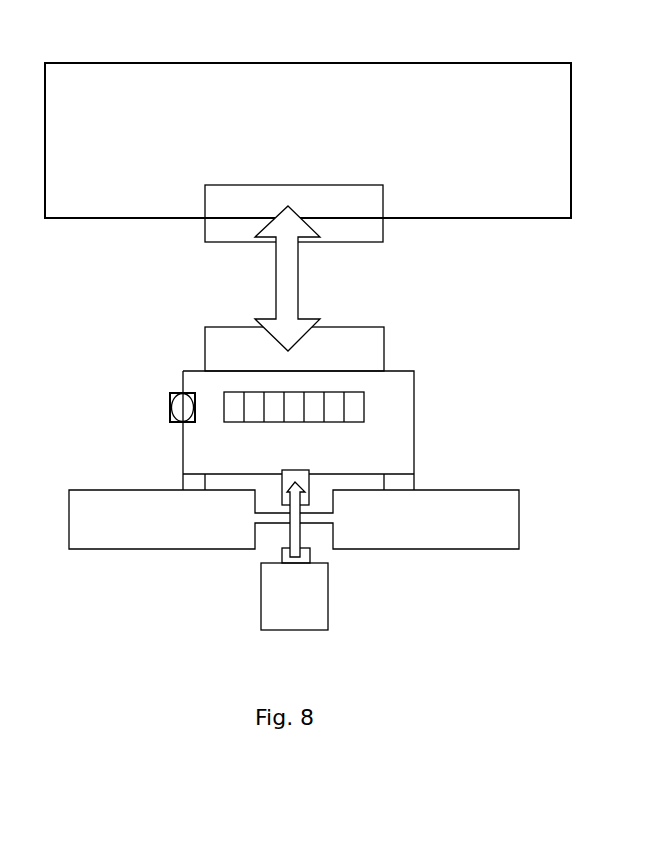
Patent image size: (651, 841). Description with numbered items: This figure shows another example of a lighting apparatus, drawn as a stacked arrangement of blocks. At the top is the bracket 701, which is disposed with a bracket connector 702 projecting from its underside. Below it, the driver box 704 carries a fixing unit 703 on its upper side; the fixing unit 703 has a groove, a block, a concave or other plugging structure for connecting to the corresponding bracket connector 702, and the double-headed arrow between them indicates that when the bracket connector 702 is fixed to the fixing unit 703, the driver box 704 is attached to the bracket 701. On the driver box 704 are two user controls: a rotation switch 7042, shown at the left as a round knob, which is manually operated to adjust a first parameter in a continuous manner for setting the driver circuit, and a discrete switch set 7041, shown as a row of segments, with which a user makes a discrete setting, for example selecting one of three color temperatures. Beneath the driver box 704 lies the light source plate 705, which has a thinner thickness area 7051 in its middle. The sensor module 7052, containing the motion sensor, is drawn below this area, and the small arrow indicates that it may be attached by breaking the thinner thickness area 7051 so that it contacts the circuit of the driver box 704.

The bracket 701 is at (120, 85).
The bracket connector 702 is at (228, 229).
The fixing unit 703 is at (365, 352).
The driver box 704 is at (382, 433).
The discrete switch set 7041 is at (366, 408).
The rotation switch 7042 is at (182, 412).
The light source plate 705 is at (398, 549).
The thinner thickness area 7051 is at (278, 518).
The sensor module 7052 is at (317, 592).